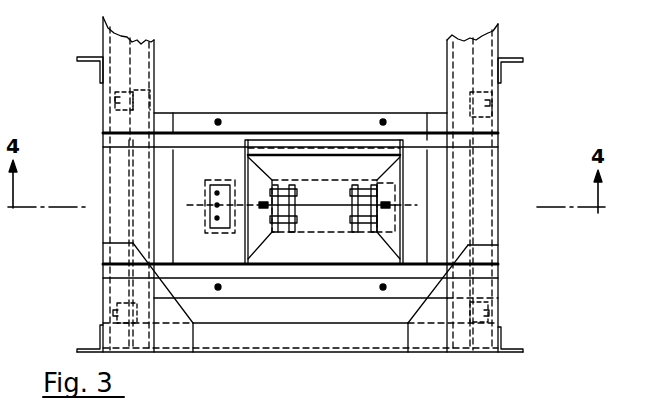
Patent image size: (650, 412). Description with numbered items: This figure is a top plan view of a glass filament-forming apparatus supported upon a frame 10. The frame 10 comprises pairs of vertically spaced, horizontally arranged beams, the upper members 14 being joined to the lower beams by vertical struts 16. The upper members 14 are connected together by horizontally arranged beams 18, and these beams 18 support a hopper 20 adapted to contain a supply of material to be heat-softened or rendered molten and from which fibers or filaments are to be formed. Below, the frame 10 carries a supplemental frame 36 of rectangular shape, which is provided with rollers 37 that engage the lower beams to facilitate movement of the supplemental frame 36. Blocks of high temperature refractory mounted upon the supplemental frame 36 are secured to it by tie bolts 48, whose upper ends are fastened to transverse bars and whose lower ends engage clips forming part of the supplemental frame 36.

The frame 10 is at (508, 162).
The upper beams 14 is at (156, 58).
The vertical struts 16 is at (80, 62).
The horizontally arranged beams 18 is at (232, 138).
The hopper 20 is at (330, 155).
The supplemental frame 36 is at (152, 91).
The rollers 37 is at (115, 110).
The tie bolts 48 is at (217, 120).